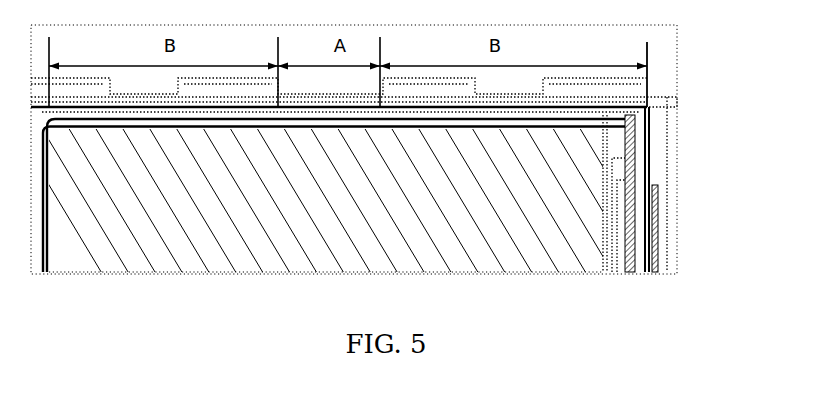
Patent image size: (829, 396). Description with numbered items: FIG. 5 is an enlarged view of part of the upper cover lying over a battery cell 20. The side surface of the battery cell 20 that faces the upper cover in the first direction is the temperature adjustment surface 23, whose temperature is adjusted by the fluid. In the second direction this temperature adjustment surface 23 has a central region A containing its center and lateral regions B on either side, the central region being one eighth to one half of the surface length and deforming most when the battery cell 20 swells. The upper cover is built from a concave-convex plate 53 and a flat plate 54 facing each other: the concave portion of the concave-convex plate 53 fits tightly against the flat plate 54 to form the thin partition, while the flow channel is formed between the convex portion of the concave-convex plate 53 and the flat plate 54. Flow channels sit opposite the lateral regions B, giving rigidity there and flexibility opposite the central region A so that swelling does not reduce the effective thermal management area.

The battery cell 20 is at (580, 203).
The temperature adjustment surface 23 is at (580, 113).
The concave-convex plate 53 is at (668, 97).
The flat plate 54 is at (650, 107).